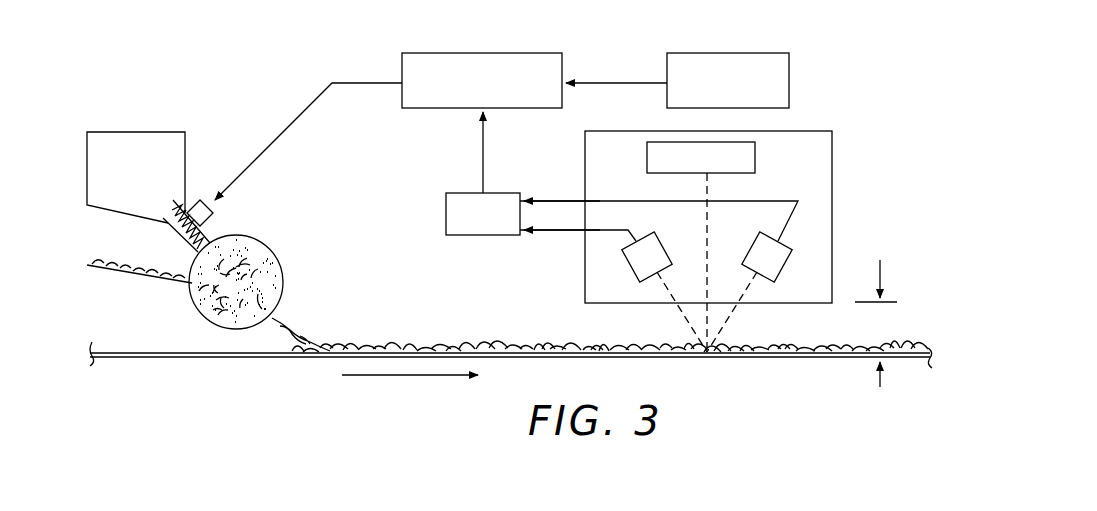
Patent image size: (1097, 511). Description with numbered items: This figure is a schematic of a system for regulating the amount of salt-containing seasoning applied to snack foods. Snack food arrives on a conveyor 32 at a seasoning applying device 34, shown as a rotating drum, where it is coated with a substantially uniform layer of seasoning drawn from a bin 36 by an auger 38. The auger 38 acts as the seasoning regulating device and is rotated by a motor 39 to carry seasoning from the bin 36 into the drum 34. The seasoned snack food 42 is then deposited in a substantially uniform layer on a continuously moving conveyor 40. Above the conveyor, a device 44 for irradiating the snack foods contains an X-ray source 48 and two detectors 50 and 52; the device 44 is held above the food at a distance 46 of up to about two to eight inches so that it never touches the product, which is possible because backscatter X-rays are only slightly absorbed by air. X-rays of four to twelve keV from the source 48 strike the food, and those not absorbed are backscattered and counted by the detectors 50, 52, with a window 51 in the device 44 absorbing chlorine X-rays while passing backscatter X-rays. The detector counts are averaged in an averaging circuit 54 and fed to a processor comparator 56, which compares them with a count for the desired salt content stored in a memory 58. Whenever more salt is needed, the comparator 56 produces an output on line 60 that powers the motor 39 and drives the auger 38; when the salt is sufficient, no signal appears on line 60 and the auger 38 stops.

The conveyor 32 is at (155, 278).
The seasoning applying device 34 is at (280, 264).
The bin 36 is at (160, 131).
The auger 38 is at (175, 232).
The motor 39 is at (213, 213).
The conveyor 40 is at (175, 356).
The snack food 42 is at (438, 344).
The device for irradiating the snack foods 44 is at (832, 185).
The distance 46 is at (882, 318).
The X-ray source 48 is at (755, 161).
The detector 50 is at (673, 230).
The window 51 is at (687, 308).
The detector 52 is at (749, 248).
The averaging circuit 54 is at (446, 214).
The processor comparator 56 is at (432, 108).
The memory 58 is at (789, 81).
The line 60 is at (250, 171).